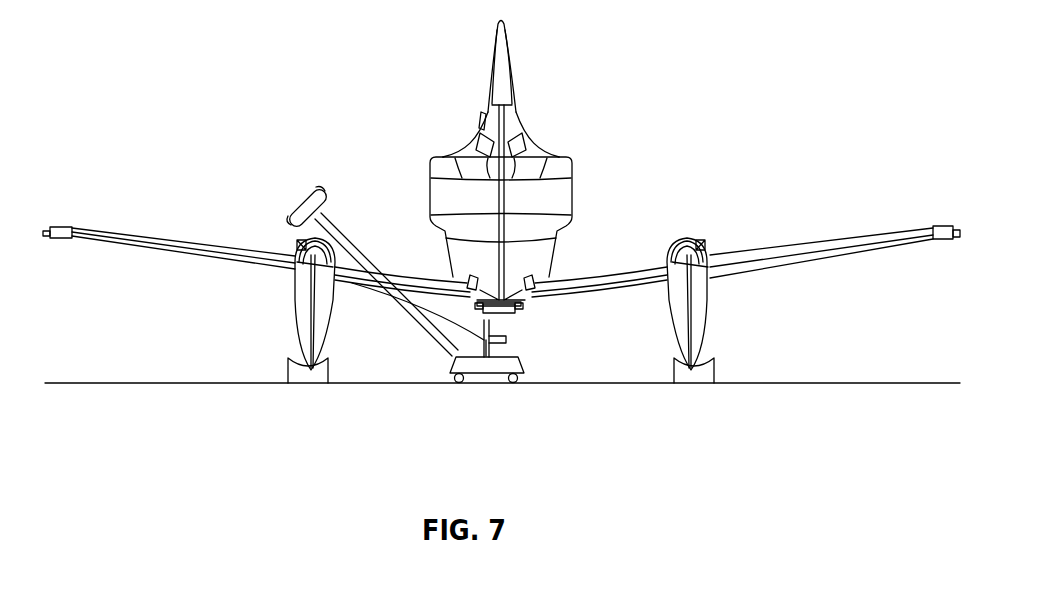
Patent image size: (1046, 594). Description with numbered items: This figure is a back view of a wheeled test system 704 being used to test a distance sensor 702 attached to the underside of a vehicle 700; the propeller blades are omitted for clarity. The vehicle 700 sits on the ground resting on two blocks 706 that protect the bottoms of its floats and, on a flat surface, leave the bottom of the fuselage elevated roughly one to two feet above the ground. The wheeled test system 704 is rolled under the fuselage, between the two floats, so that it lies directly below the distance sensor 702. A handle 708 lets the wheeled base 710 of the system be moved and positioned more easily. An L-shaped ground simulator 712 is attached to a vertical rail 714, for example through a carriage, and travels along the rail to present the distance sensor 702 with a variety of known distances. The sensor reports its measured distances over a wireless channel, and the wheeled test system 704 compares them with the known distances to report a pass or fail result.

The vehicle 700 is at (468, 150).
The distance sensor 702 is at (520, 308).
The wheeled test system 704 is at (430, 290).
The blocks 706 is at (290, 370).
The handle 708 is at (302, 193).
The wheeled base 710 is at (493, 380).
The L-shaped ground simulator 712 is at (507, 339).
The vertical rail 714 is at (360, 244).